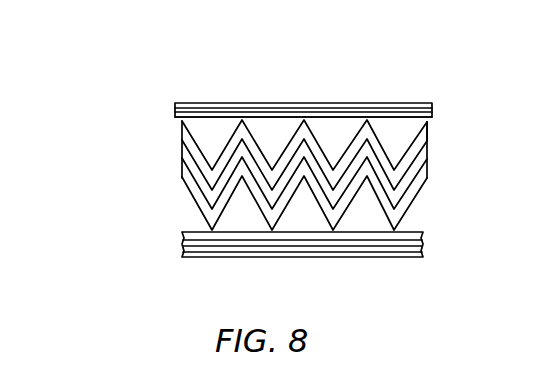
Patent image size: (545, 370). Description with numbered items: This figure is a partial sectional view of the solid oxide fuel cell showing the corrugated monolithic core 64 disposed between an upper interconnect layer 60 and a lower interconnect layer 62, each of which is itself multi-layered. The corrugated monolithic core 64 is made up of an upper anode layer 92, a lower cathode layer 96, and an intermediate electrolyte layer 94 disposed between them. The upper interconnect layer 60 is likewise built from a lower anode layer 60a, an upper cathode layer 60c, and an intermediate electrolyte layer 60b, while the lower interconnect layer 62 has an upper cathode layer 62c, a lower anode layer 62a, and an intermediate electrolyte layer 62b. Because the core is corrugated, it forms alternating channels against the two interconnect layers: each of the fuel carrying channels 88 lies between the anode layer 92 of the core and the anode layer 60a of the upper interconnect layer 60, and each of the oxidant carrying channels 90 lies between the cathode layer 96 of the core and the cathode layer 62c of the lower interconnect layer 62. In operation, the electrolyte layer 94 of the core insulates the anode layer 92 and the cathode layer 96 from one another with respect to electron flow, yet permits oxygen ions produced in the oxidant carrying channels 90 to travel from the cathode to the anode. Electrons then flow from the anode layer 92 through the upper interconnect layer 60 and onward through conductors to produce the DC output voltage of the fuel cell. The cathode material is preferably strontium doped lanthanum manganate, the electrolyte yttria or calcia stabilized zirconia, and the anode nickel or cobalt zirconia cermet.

The upper interconnect layer 60 is at (248, 81).
The lower anode layer 60a is at (175, 116).
The intermediate electrolyte layer 60b is at (175, 106).
The upper cathode layer 60c is at (187, 102).
The lower interconnect layer 62 is at (249, 241).
The lower anode layer 62a is at (182, 252).
The intermediate electrolyte layer 62b is at (182, 245).
The upper cathode layer 62c is at (182, 234).
The corrugated monolithic core 64 is at (438, 152).
The fuel carrying channels 88 is at (394, 134).
The oxidant carrying channels 90 is at (342, 228).
The upper anode layer 92 is at (428, 128).
The intermediate electrolyte layer 94 is at (415, 173).
The lower cathode layer 96 is at (410, 193).